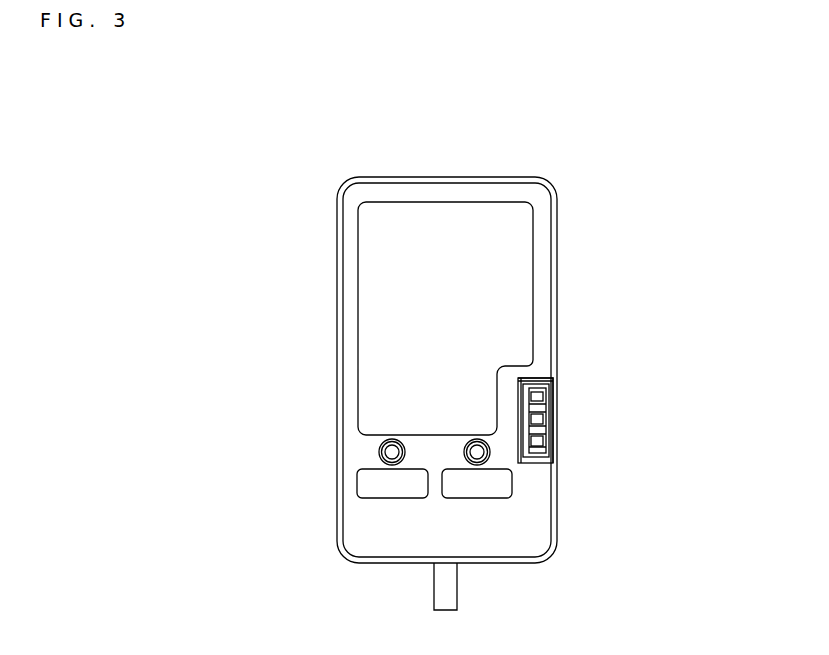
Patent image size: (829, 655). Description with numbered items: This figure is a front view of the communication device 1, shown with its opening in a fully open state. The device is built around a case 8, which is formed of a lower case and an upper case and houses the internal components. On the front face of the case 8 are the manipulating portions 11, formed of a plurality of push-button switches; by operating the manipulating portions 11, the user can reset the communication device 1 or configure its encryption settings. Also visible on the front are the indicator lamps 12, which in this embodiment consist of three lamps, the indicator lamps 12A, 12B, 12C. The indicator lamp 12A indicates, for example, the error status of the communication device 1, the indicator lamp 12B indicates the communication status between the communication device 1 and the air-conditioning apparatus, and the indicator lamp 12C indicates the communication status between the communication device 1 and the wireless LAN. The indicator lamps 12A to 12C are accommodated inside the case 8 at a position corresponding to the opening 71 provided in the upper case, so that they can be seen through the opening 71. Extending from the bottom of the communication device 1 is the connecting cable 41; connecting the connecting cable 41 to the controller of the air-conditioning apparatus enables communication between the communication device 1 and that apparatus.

The communication device 1 is at (571, 112).
The case 8 is at (555, 291).
The manipulating portions 11 is at (470, 456).
The indicator lamps 12 is at (668, 382).
The indicator lamp 12A is at (546, 397).
The indicator lamp 12B is at (546, 419).
The indicator lamp 12C is at (546, 441).
The connecting cable 41 is at (444, 595).
The opening 71 is at (541, 372).